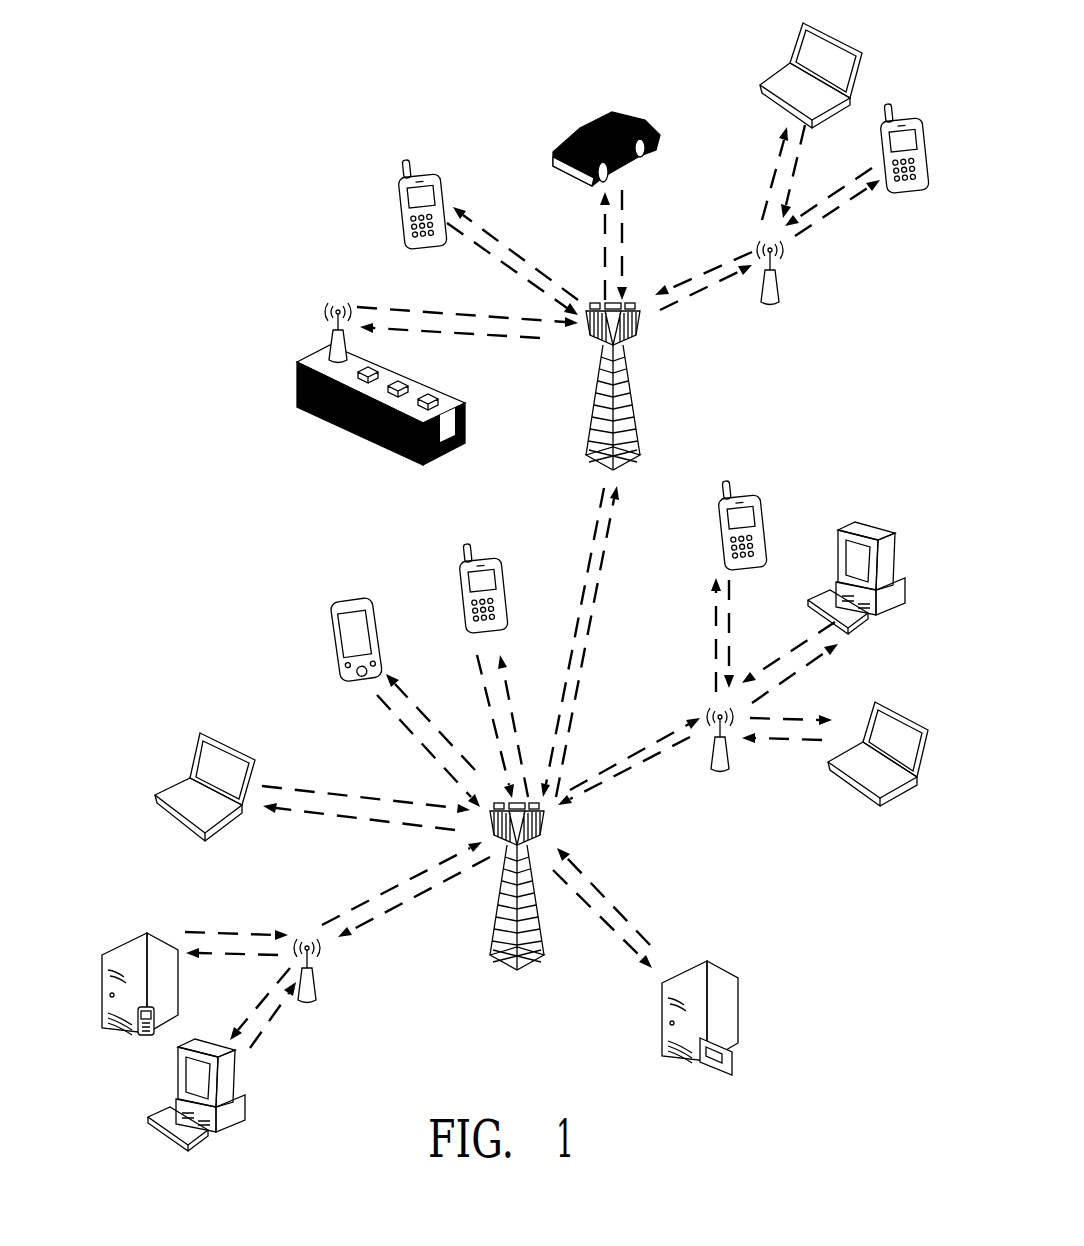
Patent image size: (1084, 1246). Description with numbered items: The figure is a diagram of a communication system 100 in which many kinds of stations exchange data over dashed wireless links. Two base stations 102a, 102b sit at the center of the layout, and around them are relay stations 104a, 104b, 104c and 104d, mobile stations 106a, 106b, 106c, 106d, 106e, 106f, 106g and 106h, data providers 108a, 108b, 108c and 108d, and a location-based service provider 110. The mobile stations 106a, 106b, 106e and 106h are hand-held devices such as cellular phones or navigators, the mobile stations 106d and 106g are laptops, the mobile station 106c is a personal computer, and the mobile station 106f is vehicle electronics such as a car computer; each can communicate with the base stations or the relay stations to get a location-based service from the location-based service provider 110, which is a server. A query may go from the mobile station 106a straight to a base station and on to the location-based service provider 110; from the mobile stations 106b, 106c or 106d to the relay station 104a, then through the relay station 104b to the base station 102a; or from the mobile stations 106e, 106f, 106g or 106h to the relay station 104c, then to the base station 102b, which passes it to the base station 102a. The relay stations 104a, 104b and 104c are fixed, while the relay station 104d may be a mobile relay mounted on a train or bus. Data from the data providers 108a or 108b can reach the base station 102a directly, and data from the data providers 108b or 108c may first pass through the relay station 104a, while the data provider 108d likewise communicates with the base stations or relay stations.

The communication system 100 is at (216, 79).
The base station 102a is at (503, 965).
The base station 102b is at (632, 458).
The relay station 104a is at (308, 1003).
The relay station 104b is at (718, 773).
The relay station 104c is at (769, 306).
The relay station 104d is at (328, 345).
The mobile station 106a is at (470, 547).
The mobile station 106b is at (738, 495).
The mobile station 106c is at (852, 526).
The mobile station 106d is at (856, 800).
The mobile station 106e is at (405, 163).
The mobile station 106f is at (608, 112).
The mobile station 106g is at (782, 70).
The mobile station 106h is at (903, 192).
The data provider 108a is at (197, 733).
The data provider 108b is at (130, 948).
The data provider 108c is at (248, 1088).
The data provider 108d is at (333, 600).
The location-based service provider 110 is at (688, 1062).